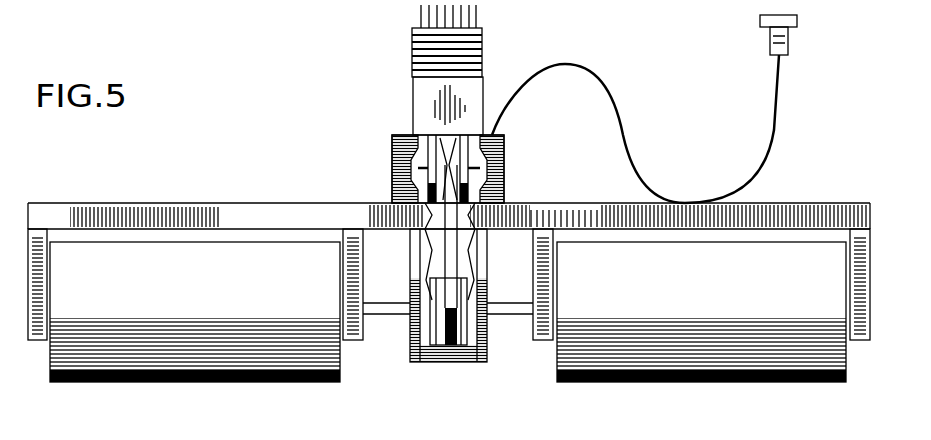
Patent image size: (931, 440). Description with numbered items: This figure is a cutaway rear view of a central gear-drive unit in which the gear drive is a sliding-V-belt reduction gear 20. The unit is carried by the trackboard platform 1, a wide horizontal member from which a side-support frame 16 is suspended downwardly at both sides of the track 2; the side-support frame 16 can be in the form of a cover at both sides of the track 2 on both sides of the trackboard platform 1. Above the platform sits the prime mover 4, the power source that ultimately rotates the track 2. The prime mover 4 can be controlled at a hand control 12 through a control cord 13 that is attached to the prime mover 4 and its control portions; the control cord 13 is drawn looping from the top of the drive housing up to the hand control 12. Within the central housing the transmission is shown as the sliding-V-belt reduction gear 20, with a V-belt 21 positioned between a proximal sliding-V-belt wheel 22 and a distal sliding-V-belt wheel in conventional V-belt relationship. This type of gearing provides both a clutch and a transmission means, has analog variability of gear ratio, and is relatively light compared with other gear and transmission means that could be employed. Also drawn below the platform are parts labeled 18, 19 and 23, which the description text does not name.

The trackboard platform 1 is at (145, 212).
The track 2 is at (199, 263).
The prime mover 4 is at (473, 45).
The hand control 12 is at (762, 24).
The control cord 13 is at (593, 72).
The side-support frame 16 is at (37, 244).
The rod 18 is at (385, 323).
The rod 19 is at (512, 325).
The sliding-V-belt reduction gear 20 is at (392, 135).
The V-belt 21 is at (445, 263).
The proximal sliding-V-belt wheel 22 is at (449, 150).
The bottom seat 23 is at (449, 345).